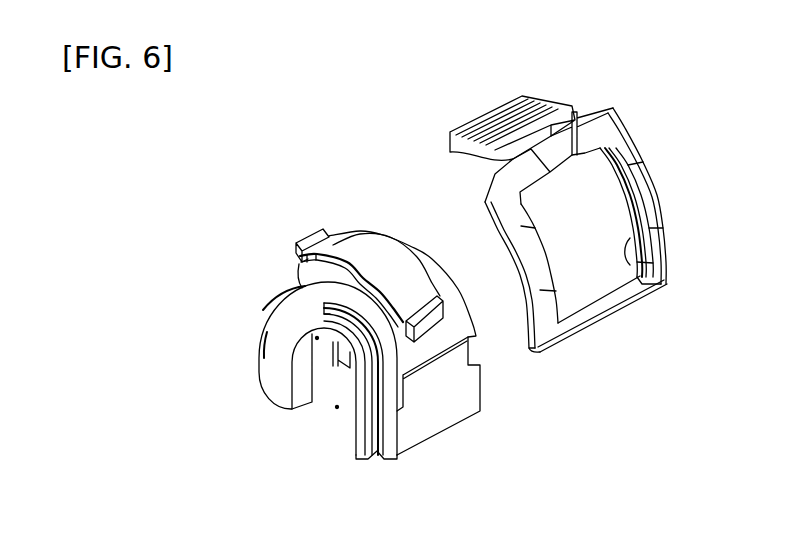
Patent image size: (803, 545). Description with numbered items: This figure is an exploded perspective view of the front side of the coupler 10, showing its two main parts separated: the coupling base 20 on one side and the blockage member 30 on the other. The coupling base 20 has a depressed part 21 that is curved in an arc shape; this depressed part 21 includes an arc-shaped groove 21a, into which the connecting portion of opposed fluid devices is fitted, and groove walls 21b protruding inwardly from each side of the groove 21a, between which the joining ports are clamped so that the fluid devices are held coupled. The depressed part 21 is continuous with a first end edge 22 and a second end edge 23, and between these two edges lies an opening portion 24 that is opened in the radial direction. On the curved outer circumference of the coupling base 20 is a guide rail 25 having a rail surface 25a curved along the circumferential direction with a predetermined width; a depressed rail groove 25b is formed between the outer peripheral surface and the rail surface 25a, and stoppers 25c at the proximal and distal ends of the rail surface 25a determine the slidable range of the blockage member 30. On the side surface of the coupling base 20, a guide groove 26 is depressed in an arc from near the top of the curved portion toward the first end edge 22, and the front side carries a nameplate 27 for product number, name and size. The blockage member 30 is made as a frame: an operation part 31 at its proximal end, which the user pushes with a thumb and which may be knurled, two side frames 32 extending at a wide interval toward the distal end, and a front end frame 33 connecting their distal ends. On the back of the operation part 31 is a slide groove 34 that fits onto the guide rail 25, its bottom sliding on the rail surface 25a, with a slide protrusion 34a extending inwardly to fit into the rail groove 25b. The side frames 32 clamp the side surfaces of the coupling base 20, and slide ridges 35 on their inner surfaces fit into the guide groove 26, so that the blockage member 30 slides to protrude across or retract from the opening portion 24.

The coupler 10 is at (286, 161).
The coupling base 20 is at (258, 365).
The depressed part 21 is at (298, 337).
The groove 21a is at (312, 343).
The groove walls 21b is at (305, 402).
The first end edge 22 is at (362, 459).
The second end edge 23 is at (298, 405).
The opening portion 24 is at (337, 409).
The guide rail 25 is at (348, 247).
The rail surface 25a is at (416, 284).
The rail groove 25b is at (333, 231).
The stoppers 25c is at (313, 243).
The guide groove 26 is at (398, 446).
The nameplate 27 is at (448, 417).
The blockage member 30 is at (640, 157).
The operation part 31 is at (482, 118).
The side frames 32 is at (655, 207).
The front end frame 33 is at (597, 308).
The slide groove 34 is at (574, 128).
The slide protrusion 34a is at (570, 156).
The slide ridges 35 is at (640, 253).